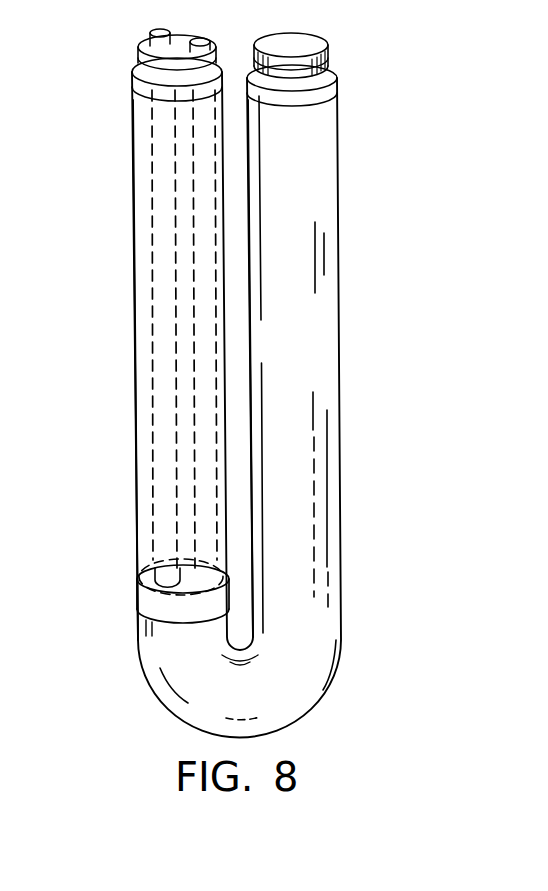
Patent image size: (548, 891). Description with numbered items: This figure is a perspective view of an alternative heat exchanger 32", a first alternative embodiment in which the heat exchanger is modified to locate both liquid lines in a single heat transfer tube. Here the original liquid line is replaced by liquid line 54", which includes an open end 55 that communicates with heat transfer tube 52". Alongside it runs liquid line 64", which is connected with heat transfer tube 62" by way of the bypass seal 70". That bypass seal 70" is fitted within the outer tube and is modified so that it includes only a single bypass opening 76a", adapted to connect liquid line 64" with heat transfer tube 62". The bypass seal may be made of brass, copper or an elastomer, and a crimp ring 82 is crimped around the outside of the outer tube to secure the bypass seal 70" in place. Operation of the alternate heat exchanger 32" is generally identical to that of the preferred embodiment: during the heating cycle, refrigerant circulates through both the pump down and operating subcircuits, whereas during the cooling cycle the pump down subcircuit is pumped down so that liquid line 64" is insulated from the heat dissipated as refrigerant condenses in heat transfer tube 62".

The heat exchanger 32 is at (52, 201).
The heat transfer tube 52 is at (144, 122).
The liquid line 54 is at (229, 90).
The open end 55 is at (176, 547).
The heat transfer tube 62 is at (296, 52).
The liquid line 64 is at (148, 106).
The bypass seal 70 is at (141, 566).
The bypass opening 76a is at (141, 603).
The crimp ring 82 is at (141, 612).